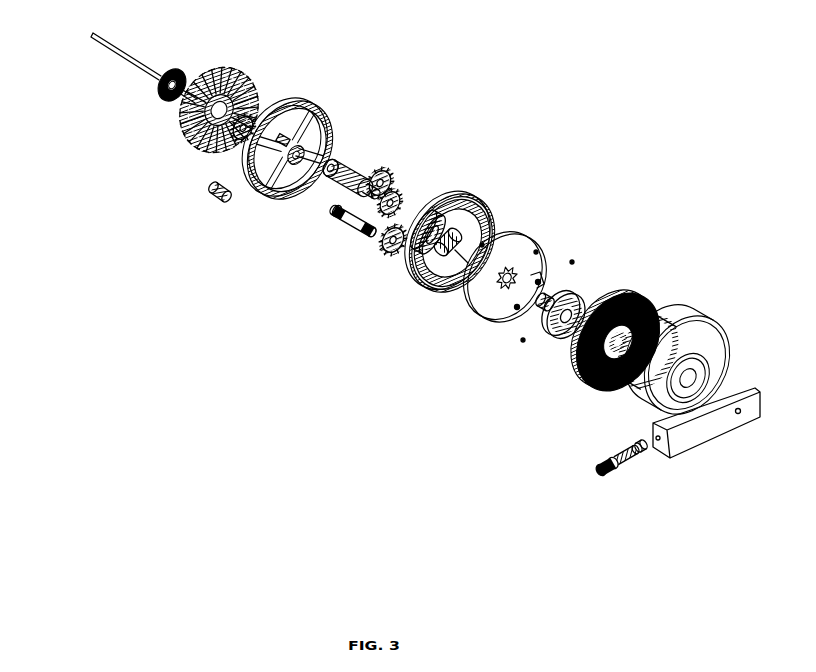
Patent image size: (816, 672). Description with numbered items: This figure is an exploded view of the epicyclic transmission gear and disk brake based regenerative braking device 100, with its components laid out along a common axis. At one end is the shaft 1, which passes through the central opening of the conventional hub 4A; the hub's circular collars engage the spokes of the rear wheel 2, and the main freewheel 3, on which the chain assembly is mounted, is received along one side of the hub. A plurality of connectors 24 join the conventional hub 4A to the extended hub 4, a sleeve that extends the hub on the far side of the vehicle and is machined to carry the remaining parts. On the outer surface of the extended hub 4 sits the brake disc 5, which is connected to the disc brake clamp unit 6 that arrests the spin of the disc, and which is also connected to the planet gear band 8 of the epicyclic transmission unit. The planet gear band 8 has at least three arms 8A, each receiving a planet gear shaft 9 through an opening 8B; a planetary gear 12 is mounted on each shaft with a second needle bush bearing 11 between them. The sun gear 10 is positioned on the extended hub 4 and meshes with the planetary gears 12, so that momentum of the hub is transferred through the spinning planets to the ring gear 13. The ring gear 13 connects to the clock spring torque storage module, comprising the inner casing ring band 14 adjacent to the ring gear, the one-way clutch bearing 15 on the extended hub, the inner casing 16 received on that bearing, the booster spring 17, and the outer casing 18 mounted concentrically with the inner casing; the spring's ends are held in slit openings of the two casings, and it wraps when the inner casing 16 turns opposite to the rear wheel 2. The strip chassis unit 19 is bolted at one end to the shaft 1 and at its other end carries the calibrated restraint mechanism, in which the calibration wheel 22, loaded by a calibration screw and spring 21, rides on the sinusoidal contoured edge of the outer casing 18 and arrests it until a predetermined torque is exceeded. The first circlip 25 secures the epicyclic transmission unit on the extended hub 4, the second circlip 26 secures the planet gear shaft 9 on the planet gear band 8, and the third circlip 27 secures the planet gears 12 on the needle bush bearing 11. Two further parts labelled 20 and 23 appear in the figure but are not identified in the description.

The shaft 1 is at (92, 38).
The rear wheel 2 is at (182, 117).
The main freewheel 3 is at (157, 89).
The extended hub 4 is at (231, 148).
The conventional hub 4A is at (217, 83).
The brake disc 5 is at (316, 97).
The disc brake clamp unit 6 is at (228, 203).
The planet gear band 8 is at (366, 176).
The arms 8A is at (338, 174).
The openings 8B is at (343, 210).
The planet gear shaft 9 is at (340, 214).
The sun gear 10 is at (430, 197).
The second needle bush bearing 11 is at (370, 233).
The planetary gear 12 is at (383, 250).
The ring gear 13 is at (426, 262).
The inner casing ring band 14 is at (538, 238).
The one-way clutch bearing 15 is at (551, 290).
The inner casing 16 is at (593, 300).
The booster spring 17 is at (633, 297).
The outer casing 18 is at (710, 318).
The strip chassis unit 19 is at (738, 392).
The bolt shank 20 is at (611, 461).
The spring 21 is at (601, 473).
The calibration wheel 22 is at (635, 441).
The hub 23 is at (337, 150).
The connectors 24 is at (282, 97).
The first circlip 25 is at (488, 211).
The second circlip 26 is at (337, 210).
The third circlip 27 is at (413, 260).
The epicyclic transmission gear and disk brake based regenerative braking device 100 is at (378, 475).